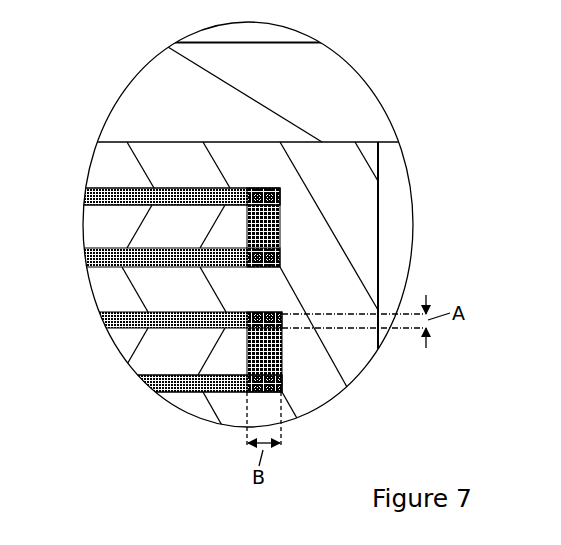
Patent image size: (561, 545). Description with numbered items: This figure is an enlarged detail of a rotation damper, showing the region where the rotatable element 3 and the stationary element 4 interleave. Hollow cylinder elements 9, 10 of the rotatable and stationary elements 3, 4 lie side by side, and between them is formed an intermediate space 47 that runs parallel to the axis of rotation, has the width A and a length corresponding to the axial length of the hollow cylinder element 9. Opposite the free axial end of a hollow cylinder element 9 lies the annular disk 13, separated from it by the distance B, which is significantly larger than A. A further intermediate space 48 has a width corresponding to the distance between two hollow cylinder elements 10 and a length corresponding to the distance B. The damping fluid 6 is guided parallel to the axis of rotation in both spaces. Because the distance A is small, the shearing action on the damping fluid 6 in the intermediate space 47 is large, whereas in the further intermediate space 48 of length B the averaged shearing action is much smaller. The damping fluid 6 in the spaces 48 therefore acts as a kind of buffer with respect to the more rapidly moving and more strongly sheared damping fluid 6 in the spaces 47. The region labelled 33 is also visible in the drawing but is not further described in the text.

The skin panel 33 is at (332, 76).
The stationary element 4 is at (343, 180).
The annular disk 13 is at (332, 278).
The rotatable element 3 is at (103, 221).
The hollow cylinder element 9 is at (113, 230).
The hollow cylinder element 10 is at (120, 292).
The damping fluid 6 is at (280, 345).
The further intermediate space 48 is at (285, 223).
The intermediate space 47 is at (110, 187).